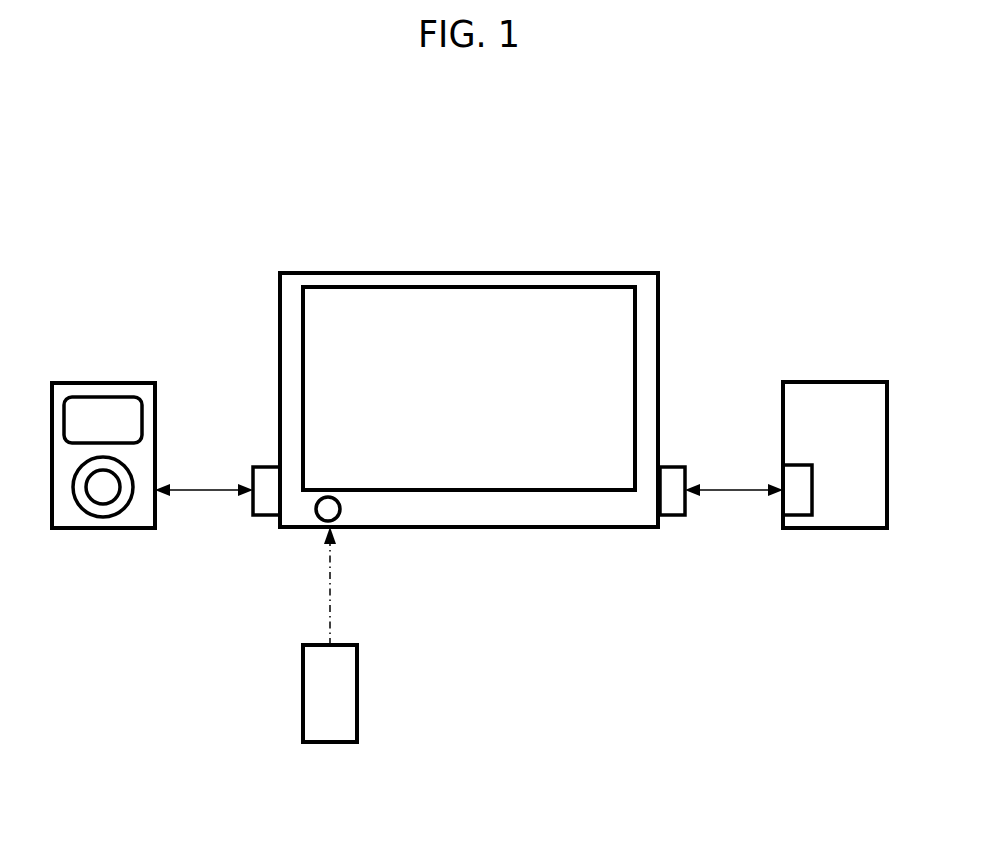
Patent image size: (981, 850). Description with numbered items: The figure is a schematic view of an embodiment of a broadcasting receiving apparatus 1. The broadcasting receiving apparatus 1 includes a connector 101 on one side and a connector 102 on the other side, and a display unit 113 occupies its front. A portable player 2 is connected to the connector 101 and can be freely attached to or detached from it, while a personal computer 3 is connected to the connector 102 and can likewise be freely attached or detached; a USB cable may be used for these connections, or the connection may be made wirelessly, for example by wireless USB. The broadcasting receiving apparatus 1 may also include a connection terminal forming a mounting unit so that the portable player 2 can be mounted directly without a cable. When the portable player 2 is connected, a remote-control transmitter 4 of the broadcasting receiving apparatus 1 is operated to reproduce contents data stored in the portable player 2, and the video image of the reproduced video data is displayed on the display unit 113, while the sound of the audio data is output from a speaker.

The broadcasting receiving apparatus 1 is at (530, 272).
The display unit 113 is at (357, 300).
The connector 101 is at (265, 514).
The connector 102 is at (672, 508).
The portable player 2 is at (114, 383).
The personal computer 3 is at (845, 382).
The remote-control transmitter 4 is at (357, 683).